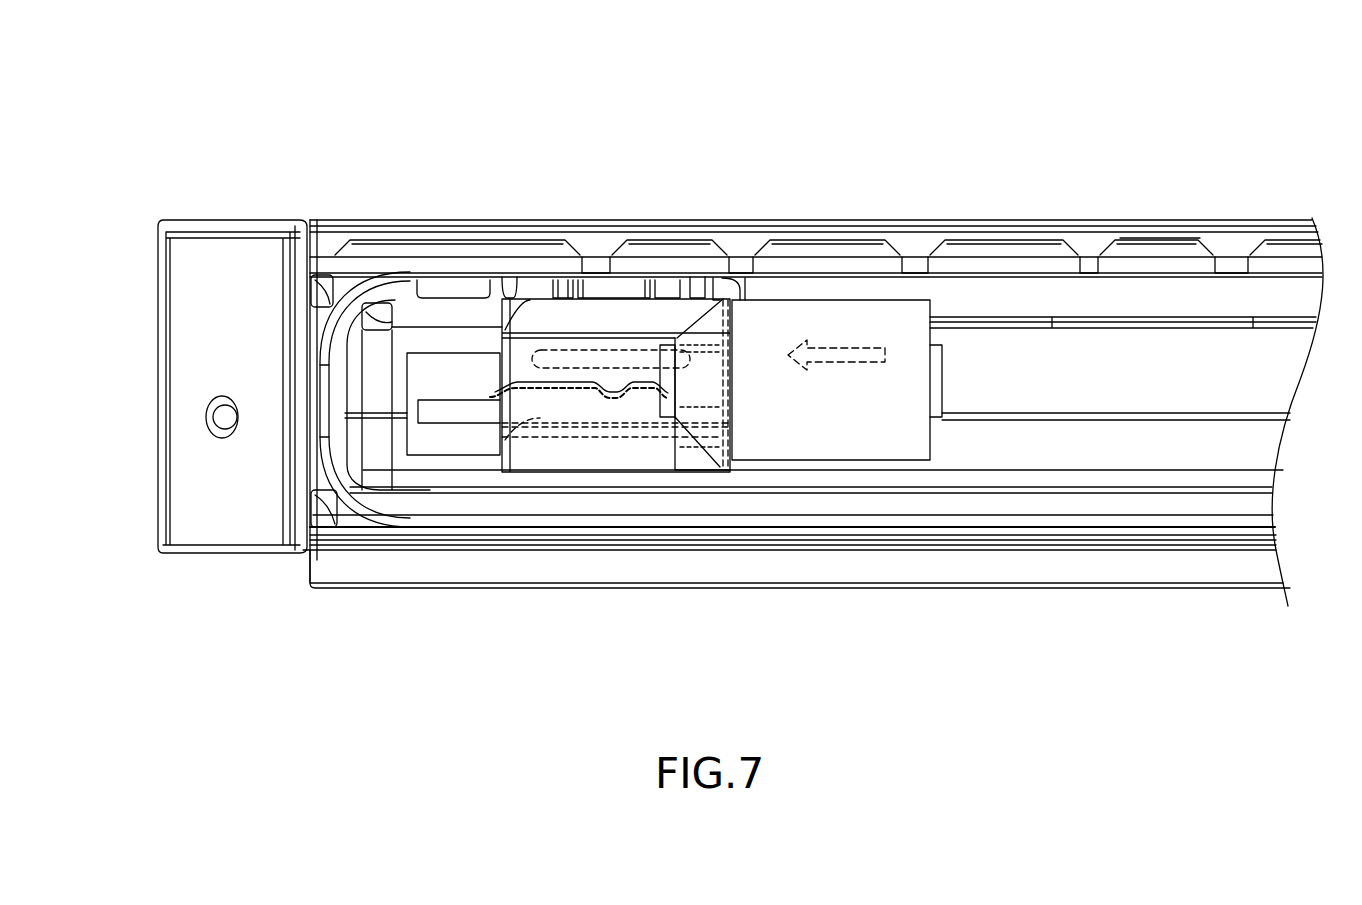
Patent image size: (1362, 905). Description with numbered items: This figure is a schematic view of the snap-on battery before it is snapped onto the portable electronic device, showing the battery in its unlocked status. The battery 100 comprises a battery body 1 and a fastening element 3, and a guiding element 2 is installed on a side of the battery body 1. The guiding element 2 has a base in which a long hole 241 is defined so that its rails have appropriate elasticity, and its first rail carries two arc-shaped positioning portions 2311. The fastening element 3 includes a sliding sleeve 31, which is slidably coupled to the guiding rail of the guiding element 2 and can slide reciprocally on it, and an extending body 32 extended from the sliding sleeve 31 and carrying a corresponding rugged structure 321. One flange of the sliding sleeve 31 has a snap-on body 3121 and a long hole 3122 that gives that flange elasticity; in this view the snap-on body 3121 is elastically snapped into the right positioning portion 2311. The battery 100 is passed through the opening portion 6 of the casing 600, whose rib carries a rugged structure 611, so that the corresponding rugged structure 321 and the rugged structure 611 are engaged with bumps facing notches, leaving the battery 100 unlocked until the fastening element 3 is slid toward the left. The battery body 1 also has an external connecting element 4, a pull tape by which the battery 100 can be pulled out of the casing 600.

The battery body 1 is at (1123, 355).
The battery 100 is at (1235, 327).
The casing 600 is at (1032, 205).
The guiding element 2 is at (370, 340).
The long hole 241 is at (448, 418).
The fastening element 3 is at (718, 490).
The sliding sleeve 31 is at (550, 458).
The extending body 32 is at (543, 320).
The corresponding rugged structure 321 is at (698, 287).
The snap-on body 3121 is at (618, 385).
The long hole 3122 is at (598, 357).
The positioning portions 2311 is at (600, 397).
The external connecting element 4 is at (855, 462).
The opening portion 6 is at (1010, 335).
The rugged structure 611 is at (515, 282).